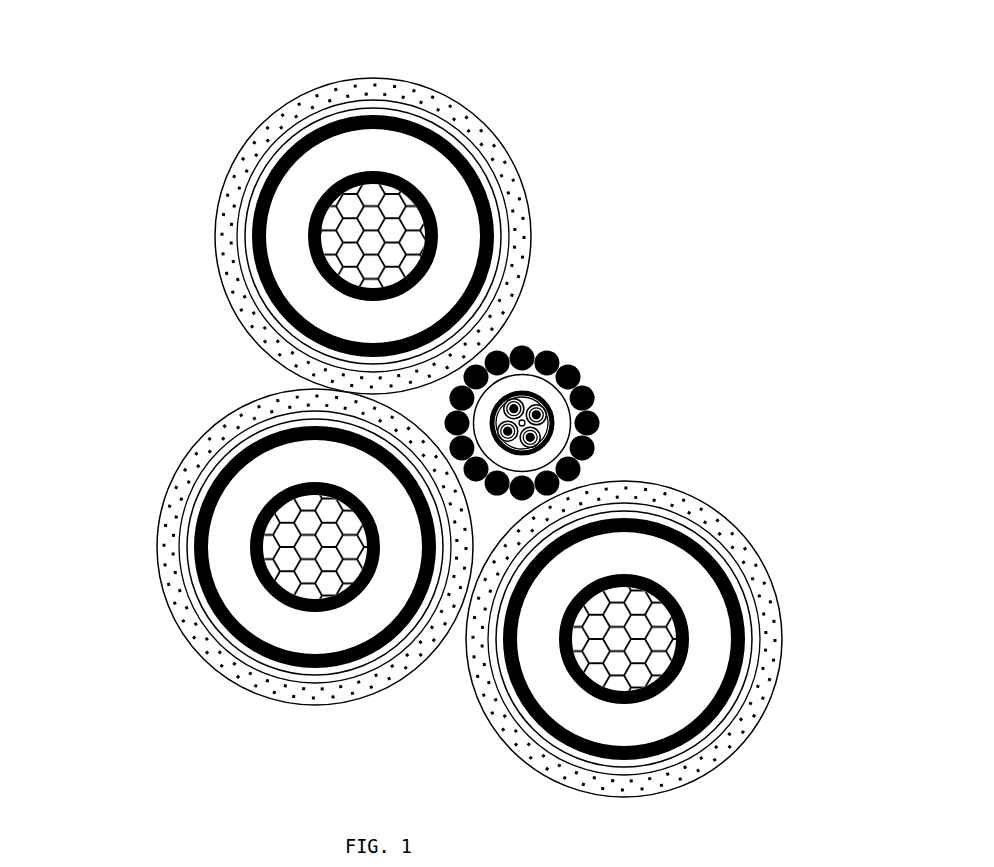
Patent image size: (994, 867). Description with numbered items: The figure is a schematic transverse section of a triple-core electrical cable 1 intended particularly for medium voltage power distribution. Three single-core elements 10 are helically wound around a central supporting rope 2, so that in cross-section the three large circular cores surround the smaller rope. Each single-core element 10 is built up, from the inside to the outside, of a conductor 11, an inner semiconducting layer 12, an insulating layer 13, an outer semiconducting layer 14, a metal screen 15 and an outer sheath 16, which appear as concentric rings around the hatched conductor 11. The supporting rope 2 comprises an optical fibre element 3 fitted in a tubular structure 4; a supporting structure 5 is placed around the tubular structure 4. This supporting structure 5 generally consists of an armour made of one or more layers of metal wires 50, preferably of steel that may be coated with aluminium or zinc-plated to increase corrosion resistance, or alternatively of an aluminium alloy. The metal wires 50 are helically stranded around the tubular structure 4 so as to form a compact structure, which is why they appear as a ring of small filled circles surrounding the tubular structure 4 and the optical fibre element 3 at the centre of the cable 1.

The triple-core electrical cable 1 is at (185, 653).
The supporting rope 2 is at (588, 385).
The optical fibre element 3 is at (565, 407).
The tubular structure 4 is at (517, 378).
The supporting structure 5 is at (588, 423).
The metal wires 50 is at (577, 452).
The single-core element 10 is at (372, 200).
The conductor 11 is at (400, 213).
The inner semiconducting layer 12 is at (375, 175).
The insulating layer 13 is at (332, 153).
The outer semiconducting layer 14 is at (270, 172).
The metal screen 15 is at (243, 237).
The outer sheath 16 is at (233, 297).